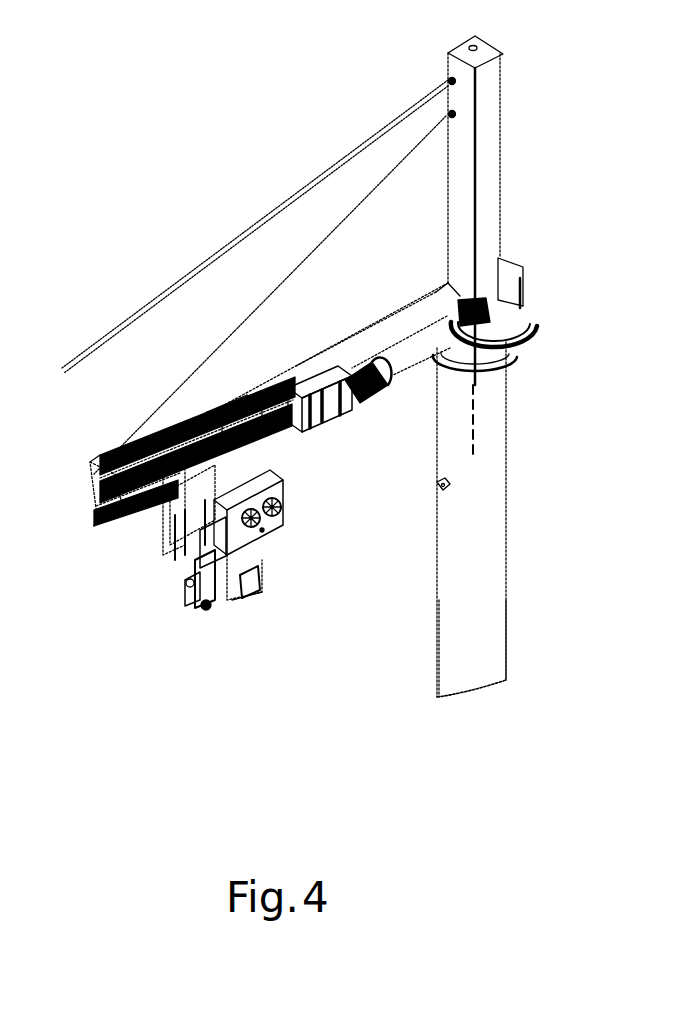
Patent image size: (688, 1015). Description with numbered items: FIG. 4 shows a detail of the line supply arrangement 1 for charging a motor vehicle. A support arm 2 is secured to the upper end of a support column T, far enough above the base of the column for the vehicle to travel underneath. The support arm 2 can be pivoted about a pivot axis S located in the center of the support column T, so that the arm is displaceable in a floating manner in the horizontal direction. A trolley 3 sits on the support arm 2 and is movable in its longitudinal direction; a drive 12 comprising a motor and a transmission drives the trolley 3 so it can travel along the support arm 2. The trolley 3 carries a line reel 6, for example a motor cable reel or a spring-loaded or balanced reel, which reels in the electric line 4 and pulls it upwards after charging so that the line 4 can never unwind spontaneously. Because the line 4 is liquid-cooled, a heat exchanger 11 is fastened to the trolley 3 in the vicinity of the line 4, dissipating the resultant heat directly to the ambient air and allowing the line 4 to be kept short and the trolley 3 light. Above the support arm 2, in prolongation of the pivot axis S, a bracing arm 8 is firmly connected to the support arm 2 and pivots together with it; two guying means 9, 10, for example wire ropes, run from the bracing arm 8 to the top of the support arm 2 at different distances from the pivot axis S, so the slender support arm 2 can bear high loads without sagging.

The line supply arrangement 1 is at (98, 175).
The support arm 2 is at (92, 511).
The trolley 3 is at (255, 591).
The electric line 4 is at (190, 567).
The line reel 6 is at (268, 478).
The bracing arm 8 is at (490, 100).
The guying means 9 is at (288, 202).
The guying means 10 is at (243, 313).
The heat exchanger 11 is at (268, 532).
The drive 12 is at (378, 370).
The pivot axis S is at (473, 427).
The support column T is at (472, 662).